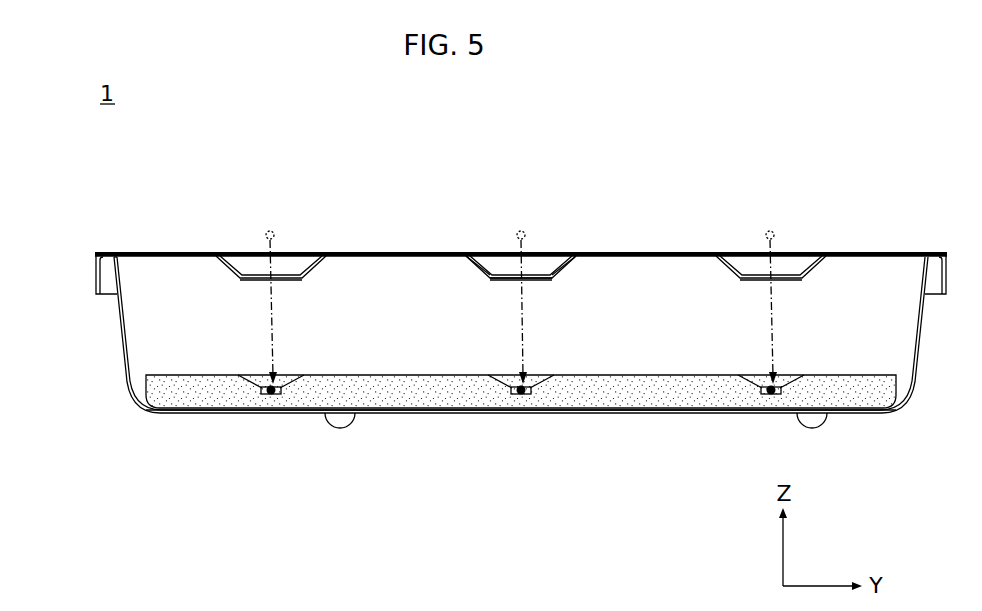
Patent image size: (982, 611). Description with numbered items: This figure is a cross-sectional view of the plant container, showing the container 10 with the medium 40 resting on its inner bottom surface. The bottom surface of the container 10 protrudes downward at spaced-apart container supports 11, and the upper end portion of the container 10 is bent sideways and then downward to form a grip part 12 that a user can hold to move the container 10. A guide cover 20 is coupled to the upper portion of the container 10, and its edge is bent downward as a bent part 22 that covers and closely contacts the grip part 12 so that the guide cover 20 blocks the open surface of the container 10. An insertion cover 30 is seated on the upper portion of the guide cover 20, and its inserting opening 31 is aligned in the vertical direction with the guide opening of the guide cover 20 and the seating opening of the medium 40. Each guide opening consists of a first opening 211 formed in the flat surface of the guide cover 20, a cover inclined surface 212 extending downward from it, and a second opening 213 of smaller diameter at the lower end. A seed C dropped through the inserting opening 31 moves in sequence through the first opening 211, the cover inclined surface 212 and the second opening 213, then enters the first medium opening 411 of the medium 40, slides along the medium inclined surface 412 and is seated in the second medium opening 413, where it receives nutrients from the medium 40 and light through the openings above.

The container 10 is at (122, 338).
The container support 11 is at (341, 420).
The grip part 12 is at (99, 285).
The guide cover 20 is at (138, 252).
The bent part 22 is at (96, 270).
The insertion cover 30 is at (183, 252).
The inserting opening 31 is at (505, 252).
The first opening 211 is at (571, 252).
The cover inclined surface 212 is at (470, 252).
The second opening 213 is at (488, 278).
The medium 40 is at (165, 390).
The first medium opening 411 is at (502, 384).
The medium inclined surface 412 is at (543, 383).
The second medium opening 413 is at (517, 394).
The seed C is at (270, 231).